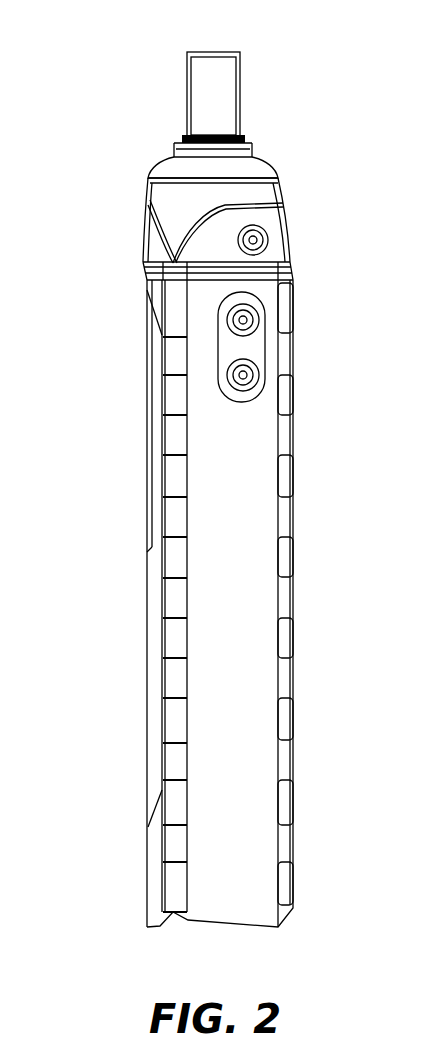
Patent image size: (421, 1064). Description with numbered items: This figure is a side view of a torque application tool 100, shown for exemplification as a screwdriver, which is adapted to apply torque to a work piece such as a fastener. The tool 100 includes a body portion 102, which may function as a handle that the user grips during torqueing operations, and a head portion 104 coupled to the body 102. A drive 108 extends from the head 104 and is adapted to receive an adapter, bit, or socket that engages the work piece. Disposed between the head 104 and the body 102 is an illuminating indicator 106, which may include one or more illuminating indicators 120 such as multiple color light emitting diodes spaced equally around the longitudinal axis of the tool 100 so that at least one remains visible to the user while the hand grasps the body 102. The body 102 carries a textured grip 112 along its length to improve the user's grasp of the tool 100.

The torque application tool 100 is at (100, 63).
The body portion 102 is at (255, 520).
The head portion 104 is at (268, 192).
The illuminating indicator 106 is at (143, 265).
The drive 108 is at (215, 112).
The textured grip 112 is at (165, 708).
The illuminating indicators 120 is at (283, 268).